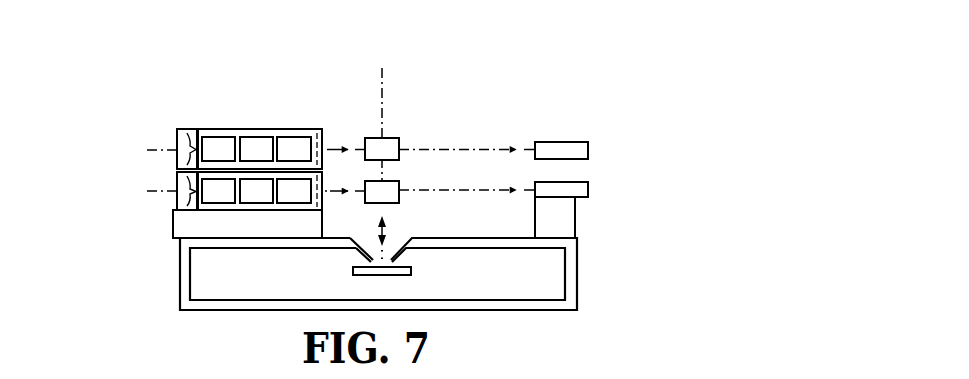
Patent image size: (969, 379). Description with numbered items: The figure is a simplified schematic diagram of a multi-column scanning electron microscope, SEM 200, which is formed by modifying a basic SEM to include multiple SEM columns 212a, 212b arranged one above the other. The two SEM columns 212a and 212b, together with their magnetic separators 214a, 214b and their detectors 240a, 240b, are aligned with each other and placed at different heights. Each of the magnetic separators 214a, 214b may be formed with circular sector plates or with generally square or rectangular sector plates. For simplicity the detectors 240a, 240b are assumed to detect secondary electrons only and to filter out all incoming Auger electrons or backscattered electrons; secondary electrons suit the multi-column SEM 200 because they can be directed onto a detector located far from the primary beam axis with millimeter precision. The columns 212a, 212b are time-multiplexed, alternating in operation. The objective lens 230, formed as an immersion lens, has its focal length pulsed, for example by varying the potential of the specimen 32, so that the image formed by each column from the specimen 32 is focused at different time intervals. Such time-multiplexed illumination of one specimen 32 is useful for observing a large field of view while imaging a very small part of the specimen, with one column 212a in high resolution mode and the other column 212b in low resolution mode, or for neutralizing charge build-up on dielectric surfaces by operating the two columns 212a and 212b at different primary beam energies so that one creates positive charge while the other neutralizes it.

The SEM 200 is at (130, 86).
The SEM column 212b is at (176, 143).
The SEM column 212a is at (176, 200).
The magnetic separator 214b is at (373, 144).
The magnetic separator 214a is at (394, 198).
The detector 240b is at (573, 146).
The detector 240a is at (580, 193).
The objective lens 230 is at (180, 273).
The specimen 32 is at (409, 269).